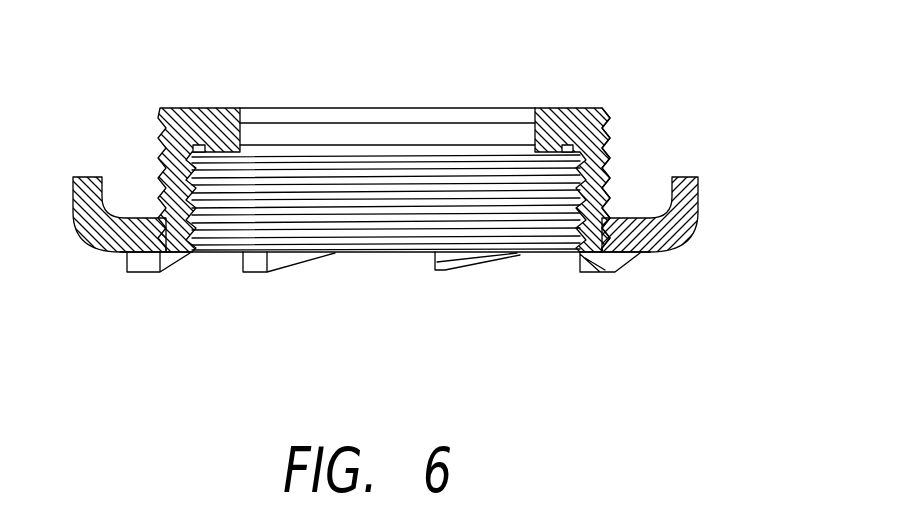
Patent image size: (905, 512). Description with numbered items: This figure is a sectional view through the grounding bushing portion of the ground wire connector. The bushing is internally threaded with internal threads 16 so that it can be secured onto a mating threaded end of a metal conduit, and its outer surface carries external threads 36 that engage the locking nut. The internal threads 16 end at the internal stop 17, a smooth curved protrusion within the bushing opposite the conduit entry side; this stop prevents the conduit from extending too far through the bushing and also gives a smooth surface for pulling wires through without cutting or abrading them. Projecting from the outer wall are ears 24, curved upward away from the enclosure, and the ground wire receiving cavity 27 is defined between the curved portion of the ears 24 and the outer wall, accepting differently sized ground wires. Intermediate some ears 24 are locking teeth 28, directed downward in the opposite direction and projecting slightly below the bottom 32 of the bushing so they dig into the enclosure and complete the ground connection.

The internal threads 16 is at (193, 211).
The internal stop 17 is at (205, 136).
The projecting ears 24 is at (699, 201).
The ground wire receiving cavity 27 is at (131, 175).
The locking teeth 28 is at (145, 263).
The bottom of bushing 32 is at (555, 253).
The external threads 36 is at (618, 150).